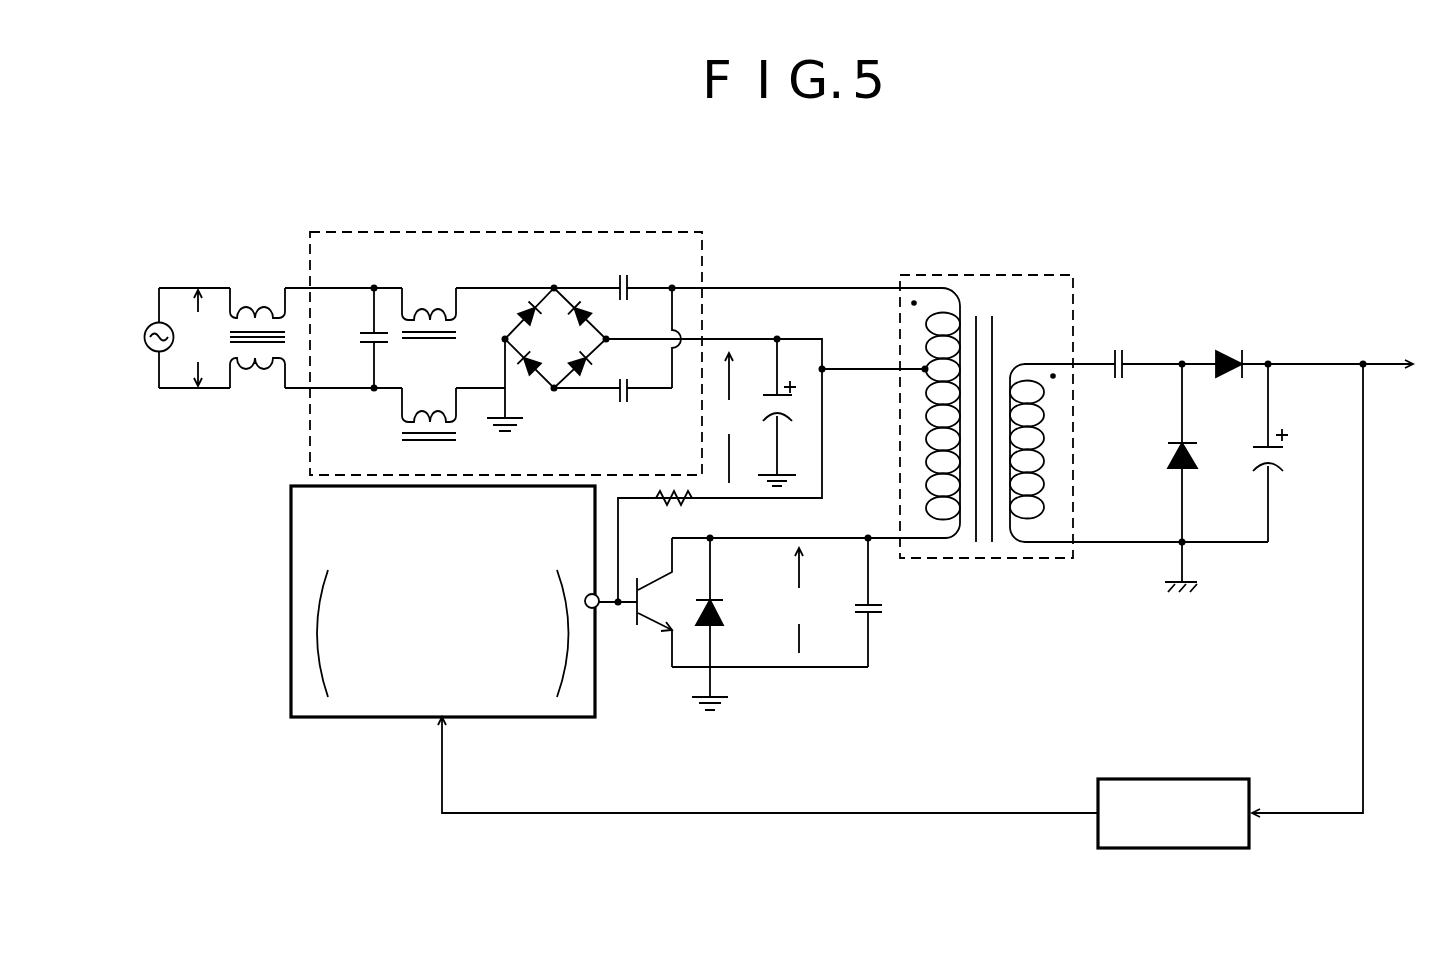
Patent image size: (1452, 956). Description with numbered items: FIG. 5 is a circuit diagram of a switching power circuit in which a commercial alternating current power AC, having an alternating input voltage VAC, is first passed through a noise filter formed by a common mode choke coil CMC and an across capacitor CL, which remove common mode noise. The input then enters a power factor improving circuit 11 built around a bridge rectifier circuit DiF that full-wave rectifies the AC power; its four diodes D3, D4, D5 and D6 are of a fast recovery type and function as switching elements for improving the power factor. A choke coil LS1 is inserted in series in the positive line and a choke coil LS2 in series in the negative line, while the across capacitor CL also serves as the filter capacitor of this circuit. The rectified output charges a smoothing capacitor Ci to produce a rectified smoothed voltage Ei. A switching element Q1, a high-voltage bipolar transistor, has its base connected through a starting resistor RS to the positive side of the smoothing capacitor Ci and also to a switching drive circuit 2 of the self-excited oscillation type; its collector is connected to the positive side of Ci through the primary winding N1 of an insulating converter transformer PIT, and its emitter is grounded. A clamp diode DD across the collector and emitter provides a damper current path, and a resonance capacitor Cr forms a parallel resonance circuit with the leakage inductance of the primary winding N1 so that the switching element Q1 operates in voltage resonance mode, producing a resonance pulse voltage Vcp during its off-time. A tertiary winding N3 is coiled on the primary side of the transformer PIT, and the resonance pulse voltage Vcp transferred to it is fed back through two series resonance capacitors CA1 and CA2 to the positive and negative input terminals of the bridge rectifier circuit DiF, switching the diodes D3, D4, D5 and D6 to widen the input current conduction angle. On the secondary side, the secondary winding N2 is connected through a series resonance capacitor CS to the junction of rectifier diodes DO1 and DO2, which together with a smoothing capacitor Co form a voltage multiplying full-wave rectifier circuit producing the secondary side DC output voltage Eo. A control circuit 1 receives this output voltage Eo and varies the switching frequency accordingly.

The control circuit 1 is at (1172, 779).
The switching drive circuit 2 is at (508, 718).
The power factor improving circuit 11 is at (518, 232).
The commercial alternating current power AC is at (147, 338).
The alternating input voltage VAC is at (203, 338).
The common mode choke coil CMC is at (257, 319).
The across capacitor CL is at (355, 338).
The choke coil LS1 is at (429, 298).
The choke coil LS2 is at (429, 430).
The bridge rectifier circuit DiF is at (574, 341).
The fast recovery diode D3 is at (530, 308).
The fast recovery diode D4 is at (523, 367).
The fast recovery diode D5 is at (585, 307).
The fast recovery diode D6 is at (584, 372).
The series resonance capacitor CA1 is at (624, 272).
The series resonance capacitor CA2 is at (629, 403).
The rectified smoothed voltage Ei is at (728, 418).
The smoothing capacitor Ci is at (783, 412).
The starting resistor RS is at (674, 511).
The switching element Q1 is at (662, 602).
The clamp diode DD is at (722, 624).
The resonance pulse voltage Vcp is at (803, 600).
The resonance capacitor Cr is at (884, 602).
The insulating converter transformer PIT is at (1051, 399).
The primary winding N1 is at (924, 448).
The secondary winding N2 is at (1046, 445).
The tertiary winding N3 is at (926, 328).
The series resonance capacitor CS is at (1118, 349).
The rectifier diode DO1 is at (1236, 349).
The rectifier diode DO2 is at (1203, 478).
The smoothing capacitor Co is at (1285, 453).
The secondary side DC output voltage Eo is at (1434, 365).